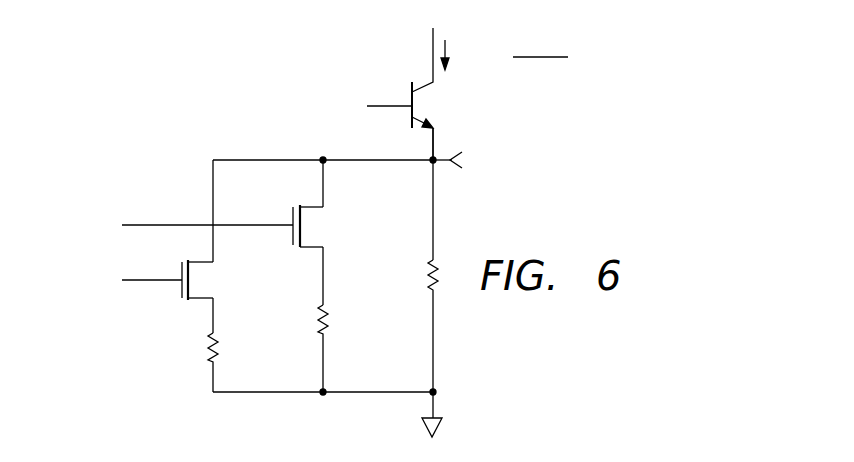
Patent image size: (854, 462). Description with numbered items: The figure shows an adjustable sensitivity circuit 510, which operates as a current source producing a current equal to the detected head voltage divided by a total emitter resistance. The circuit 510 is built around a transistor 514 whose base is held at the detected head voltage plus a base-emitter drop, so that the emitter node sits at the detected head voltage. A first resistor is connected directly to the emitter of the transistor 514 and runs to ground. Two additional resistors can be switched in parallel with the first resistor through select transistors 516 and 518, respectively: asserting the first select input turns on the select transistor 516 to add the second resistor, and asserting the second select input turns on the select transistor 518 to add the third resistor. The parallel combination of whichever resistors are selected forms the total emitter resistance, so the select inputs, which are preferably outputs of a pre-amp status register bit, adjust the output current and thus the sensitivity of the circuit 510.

The adjustable sensitivity circuit 510 is at (187, 78).
The transistor 514 is at (410, 88).
The select transistor 516 is at (291, 211).
The select transistor 518 is at (181, 296).